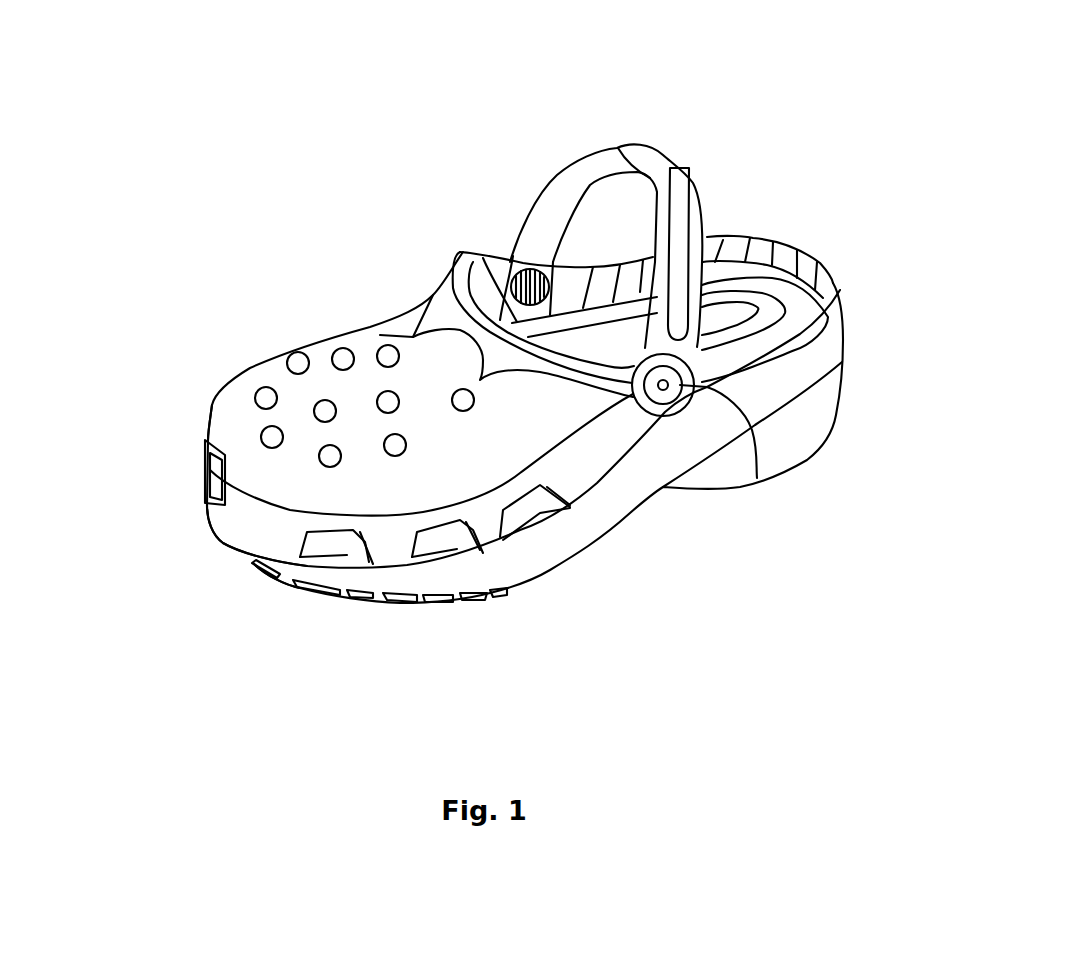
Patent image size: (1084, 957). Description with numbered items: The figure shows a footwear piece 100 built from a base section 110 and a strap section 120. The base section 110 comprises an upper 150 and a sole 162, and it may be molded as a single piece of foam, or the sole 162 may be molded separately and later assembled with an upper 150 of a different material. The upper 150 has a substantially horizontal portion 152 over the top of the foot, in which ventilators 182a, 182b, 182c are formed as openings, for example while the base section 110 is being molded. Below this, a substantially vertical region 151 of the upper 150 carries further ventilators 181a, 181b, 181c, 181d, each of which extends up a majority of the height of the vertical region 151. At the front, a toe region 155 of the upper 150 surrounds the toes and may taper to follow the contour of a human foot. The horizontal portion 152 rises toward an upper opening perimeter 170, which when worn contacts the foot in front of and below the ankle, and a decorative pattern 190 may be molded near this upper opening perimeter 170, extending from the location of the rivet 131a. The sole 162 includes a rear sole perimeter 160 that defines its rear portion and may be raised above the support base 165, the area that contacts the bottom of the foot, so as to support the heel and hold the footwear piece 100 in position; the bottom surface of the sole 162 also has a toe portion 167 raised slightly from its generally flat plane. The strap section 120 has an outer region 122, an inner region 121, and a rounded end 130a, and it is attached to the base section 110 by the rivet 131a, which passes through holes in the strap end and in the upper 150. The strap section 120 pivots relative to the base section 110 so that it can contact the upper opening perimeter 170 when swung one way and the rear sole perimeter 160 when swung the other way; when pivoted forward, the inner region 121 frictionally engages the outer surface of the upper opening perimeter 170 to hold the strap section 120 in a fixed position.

The footwear piece 100 is at (753, 104).
The base section 110 is at (297, 322).
The strap section 120 is at (633, 125).
The inner region 121 is at (573, 183).
The outer region 122 is at (676, 180).
The rounded end 130a is at (668, 416).
The rivet 131a is at (757, 478).
The upper 150 is at (243, 500).
The substantially vertical region 151 is at (267, 533).
The substantially horizontal portion 152 is at (413, 430).
The toe region 155 is at (325, 490).
The rear sole perimeter 160 is at (830, 284).
The sole 162 is at (323, 573).
The support base 165 is at (770, 238).
The toe portion 167 is at (282, 578).
The upper opening perimeter 170 is at (462, 252).
The ventilator 181a is at (347, 555).
The ventilator 181b is at (462, 547).
The ventilator 181c is at (540, 513).
The ventilator 181d is at (205, 483).
The ventilator 182a is at (260, 390).
The ventilator 182b is at (262, 430).
The ventilator 182c is at (309, 360).
The decorative pattern 190 is at (437, 321).